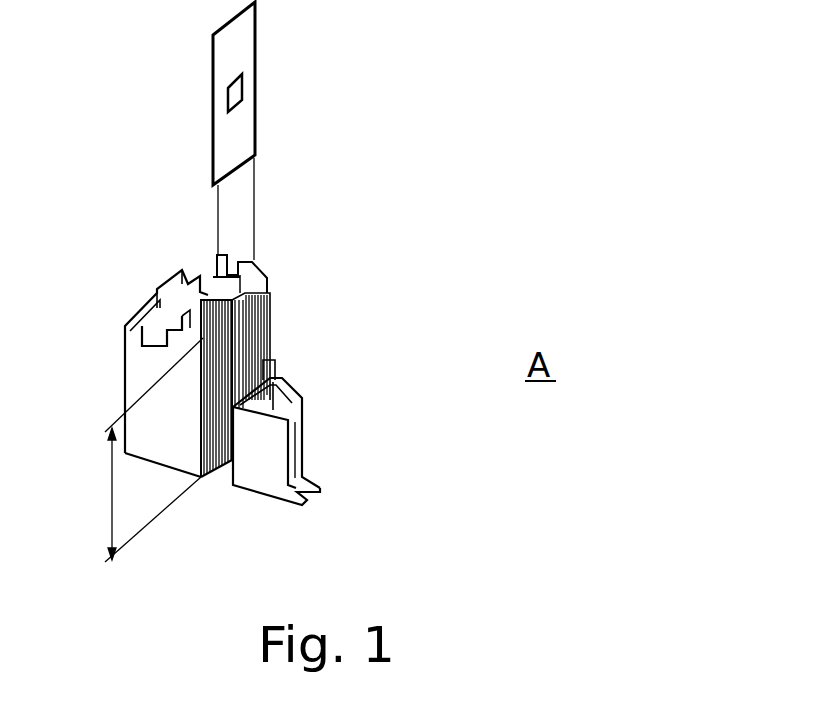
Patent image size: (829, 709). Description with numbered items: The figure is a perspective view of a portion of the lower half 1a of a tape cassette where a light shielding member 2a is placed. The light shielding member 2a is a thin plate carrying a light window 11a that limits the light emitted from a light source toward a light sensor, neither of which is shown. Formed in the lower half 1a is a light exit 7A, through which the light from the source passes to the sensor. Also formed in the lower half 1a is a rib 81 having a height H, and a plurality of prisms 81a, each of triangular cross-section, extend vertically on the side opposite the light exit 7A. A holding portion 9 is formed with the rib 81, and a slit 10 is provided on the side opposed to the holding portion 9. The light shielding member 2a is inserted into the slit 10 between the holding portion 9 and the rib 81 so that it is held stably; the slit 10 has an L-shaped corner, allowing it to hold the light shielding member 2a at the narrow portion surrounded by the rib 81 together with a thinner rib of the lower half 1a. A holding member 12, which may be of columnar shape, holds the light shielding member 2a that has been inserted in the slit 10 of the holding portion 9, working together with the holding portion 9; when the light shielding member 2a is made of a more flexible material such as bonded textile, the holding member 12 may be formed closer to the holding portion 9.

The lower half 1a is at (277, 488).
The light shielding member 2a is at (255, 70).
The light exit 7A is at (172, 320).
The holding portion 9 is at (203, 338).
The slit 10 is at (203, 345).
The light window 11a is at (235, 93).
The holding member 12 is at (252, 257).
The rib 81 is at (268, 355).
The prisms 81a is at (200, 432).
The height of rib H is at (136, 450).